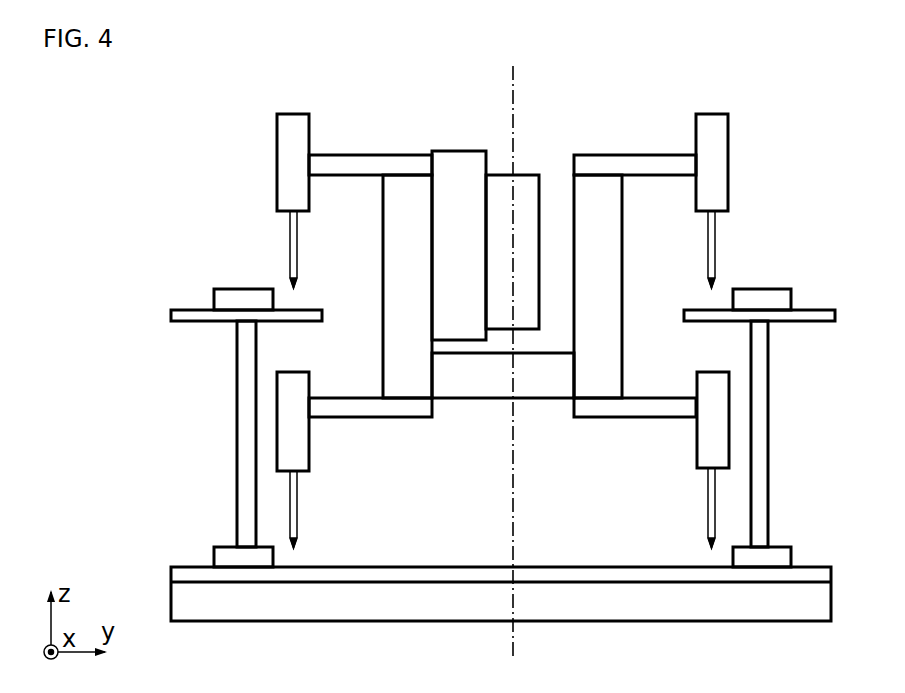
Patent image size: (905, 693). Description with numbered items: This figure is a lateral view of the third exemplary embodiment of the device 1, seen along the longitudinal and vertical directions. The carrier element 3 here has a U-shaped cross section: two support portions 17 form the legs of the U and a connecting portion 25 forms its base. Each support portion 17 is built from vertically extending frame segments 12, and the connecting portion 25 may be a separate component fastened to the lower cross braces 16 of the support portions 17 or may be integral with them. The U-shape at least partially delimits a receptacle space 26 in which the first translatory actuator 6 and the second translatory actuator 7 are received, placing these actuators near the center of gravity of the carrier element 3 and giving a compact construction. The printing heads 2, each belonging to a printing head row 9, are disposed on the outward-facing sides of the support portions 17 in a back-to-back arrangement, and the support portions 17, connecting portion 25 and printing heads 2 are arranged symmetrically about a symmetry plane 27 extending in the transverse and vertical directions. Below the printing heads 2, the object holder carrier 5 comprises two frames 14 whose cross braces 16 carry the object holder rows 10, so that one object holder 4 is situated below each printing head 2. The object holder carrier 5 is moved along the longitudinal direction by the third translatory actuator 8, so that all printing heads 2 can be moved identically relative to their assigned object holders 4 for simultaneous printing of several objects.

The device 1 is at (647, 85).
The printing head 2 is at (524, 325).
The carrier element 3 is at (403, 156).
The object holder 4 is at (493, 392).
The object holder carrier 5 is at (160, 310).
The first translatory actuator 6 is at (527, 173).
The second translatory actuator 7 is at (466, 150).
The third translatory actuator 8 is at (313, 599).
The printing head row 9 is at (502, 379).
The object holder row 10 is at (220, 290).
The frame segment 12 is at (400, 265).
The frame 14 is at (182, 303).
The cross brace 16 is at (202, 323).
The support portion 17 is at (398, 407).
The connecting portion 25 is at (530, 390).
The receptacle space 26 is at (502, 283).
The symmetry plane 27 is at (515, 87).